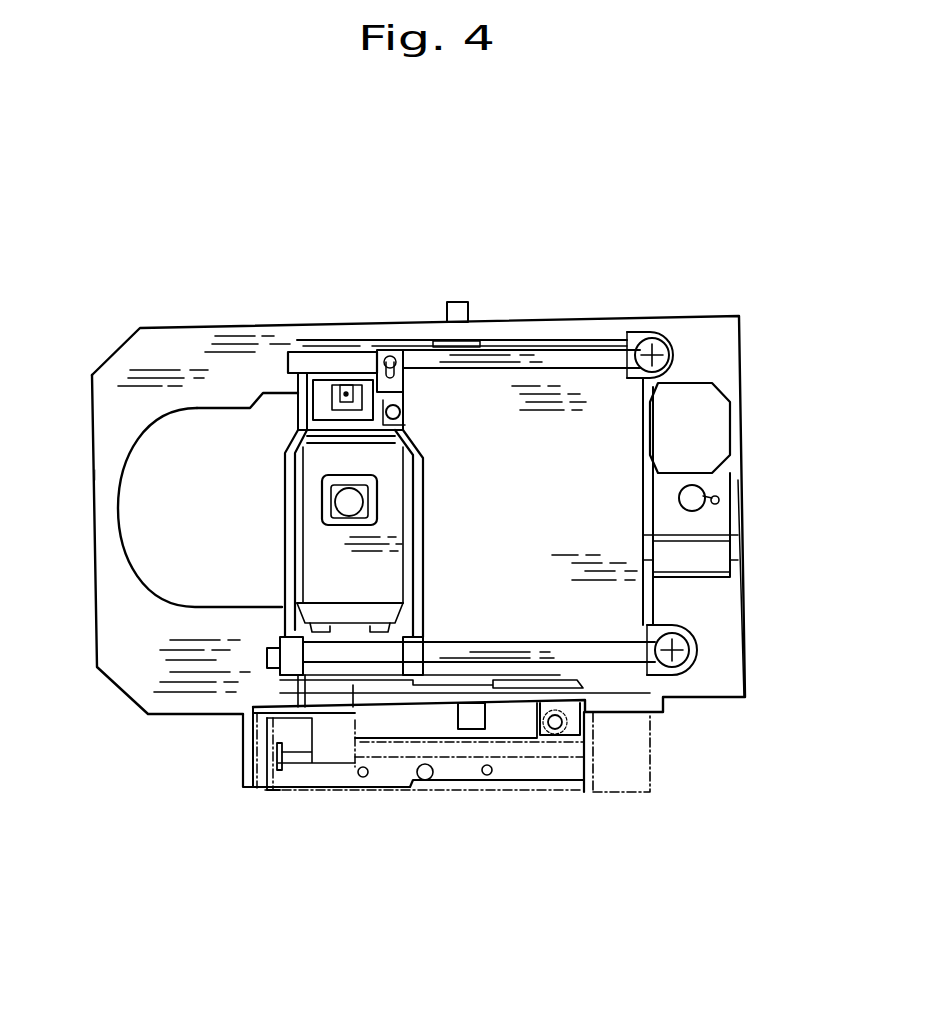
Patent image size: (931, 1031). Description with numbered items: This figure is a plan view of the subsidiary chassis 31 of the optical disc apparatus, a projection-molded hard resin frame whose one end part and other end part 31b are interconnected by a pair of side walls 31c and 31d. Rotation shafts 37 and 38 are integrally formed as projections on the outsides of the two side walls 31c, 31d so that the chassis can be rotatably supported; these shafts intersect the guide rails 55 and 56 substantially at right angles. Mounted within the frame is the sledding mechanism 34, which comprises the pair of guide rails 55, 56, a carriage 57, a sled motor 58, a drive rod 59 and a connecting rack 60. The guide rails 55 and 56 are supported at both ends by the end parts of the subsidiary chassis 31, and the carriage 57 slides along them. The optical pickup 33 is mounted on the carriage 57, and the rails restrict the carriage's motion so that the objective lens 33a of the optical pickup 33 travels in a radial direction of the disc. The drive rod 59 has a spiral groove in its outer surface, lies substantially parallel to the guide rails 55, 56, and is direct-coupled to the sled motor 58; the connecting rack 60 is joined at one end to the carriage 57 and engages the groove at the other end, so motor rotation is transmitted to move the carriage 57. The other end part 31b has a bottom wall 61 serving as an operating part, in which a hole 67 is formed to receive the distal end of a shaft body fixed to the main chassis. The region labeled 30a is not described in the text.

The opening of cover 30a is at (103, 470).
The subsidiary chassis 31 is at (742, 322).
The other end part 31b is at (737, 605).
The side wall 31c is at (382, 700).
The side wall 31d is at (530, 324).
The optical pickup 33 is at (393, 513).
The objective lens 33a is at (360, 492).
The sledding mechanism 34 is at (445, 633).
The rotation shaft 37 is at (478, 730).
The rotation shaft 38 is at (475, 303).
The guide rail 55 is at (612, 652).
The guide rail 56 is at (590, 352).
The carriage 57 is at (402, 415).
The sled motor 58 is at (617, 792).
The drive rod 59 is at (290, 790).
The connecting rack 60 is at (352, 707).
The bottom wall 61 is at (720, 522).
The hole 67 is at (702, 493).